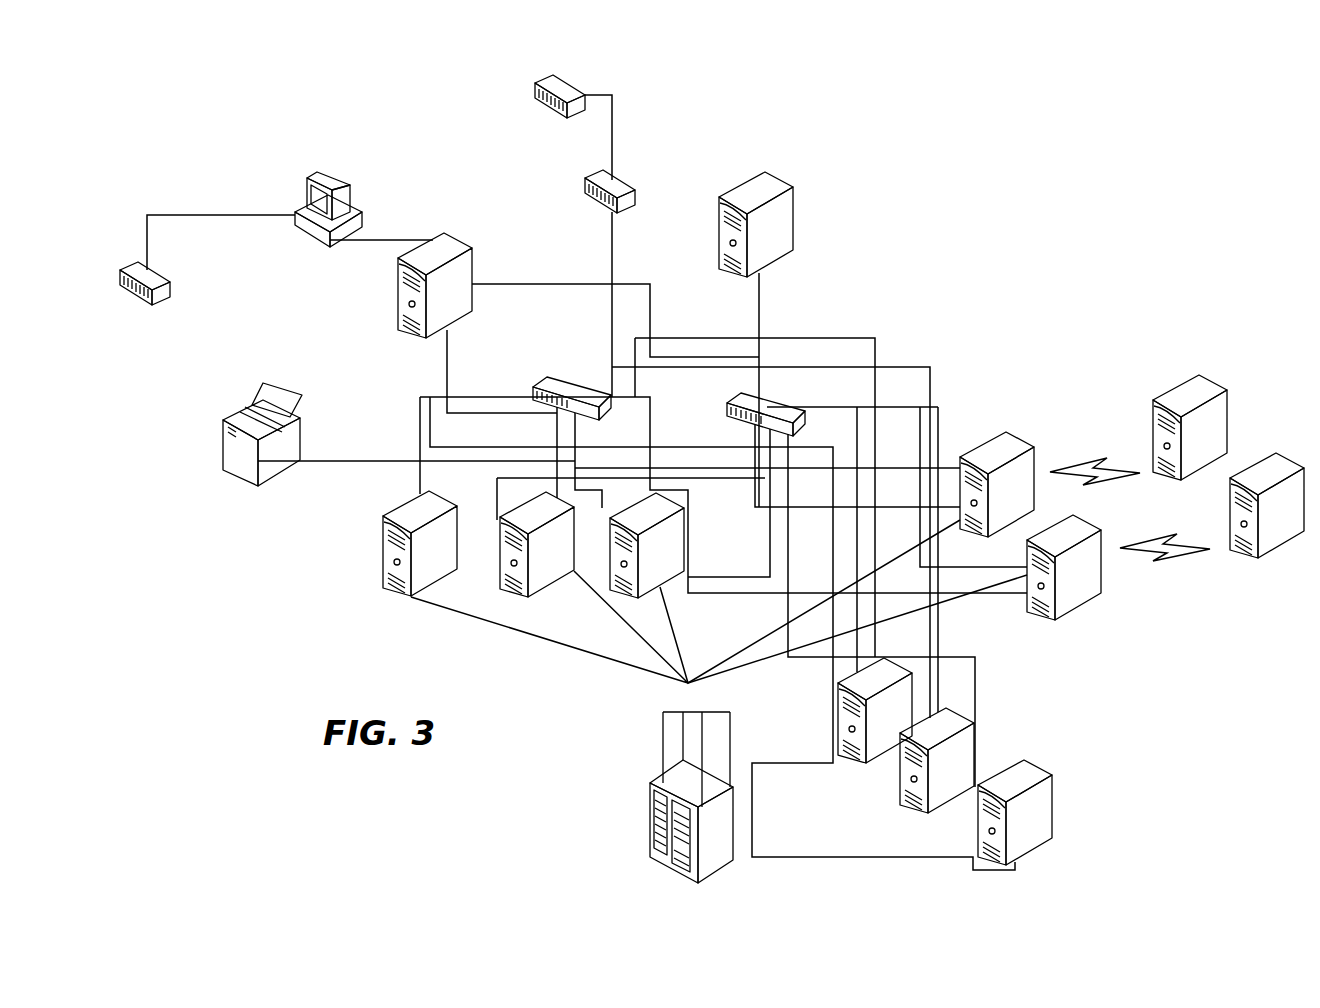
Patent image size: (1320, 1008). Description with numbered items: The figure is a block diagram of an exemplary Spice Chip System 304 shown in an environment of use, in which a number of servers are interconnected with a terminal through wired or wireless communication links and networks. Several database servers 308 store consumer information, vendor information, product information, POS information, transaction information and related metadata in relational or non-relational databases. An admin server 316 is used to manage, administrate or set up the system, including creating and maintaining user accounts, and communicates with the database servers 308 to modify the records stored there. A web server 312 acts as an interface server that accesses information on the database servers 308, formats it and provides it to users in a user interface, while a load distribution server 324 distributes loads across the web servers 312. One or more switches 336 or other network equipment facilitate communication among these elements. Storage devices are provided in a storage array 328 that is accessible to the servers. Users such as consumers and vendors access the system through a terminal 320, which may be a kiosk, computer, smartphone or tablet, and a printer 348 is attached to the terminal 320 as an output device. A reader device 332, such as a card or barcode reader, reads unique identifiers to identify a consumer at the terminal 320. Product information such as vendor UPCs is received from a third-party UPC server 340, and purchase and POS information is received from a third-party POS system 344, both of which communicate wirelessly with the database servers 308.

The Spice Chip System 304 is at (928, 197).
The database server 308 is at (383, 527).
The web server 312 is at (618, 178).
The admin server 316 is at (440, 245).
The terminal 320 is at (327, 172).
The load distribution server 324 is at (557, 78).
The storage array 328 is at (650, 800).
The reader device 332 is at (160, 270).
The switch 336 is at (565, 378).
The UPC server 340 is at (1180, 382).
The POS system 344 is at (1227, 546).
The printer 348 is at (236, 412).